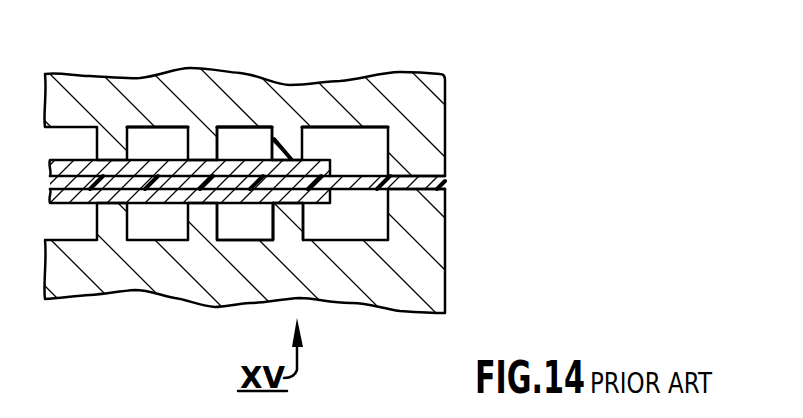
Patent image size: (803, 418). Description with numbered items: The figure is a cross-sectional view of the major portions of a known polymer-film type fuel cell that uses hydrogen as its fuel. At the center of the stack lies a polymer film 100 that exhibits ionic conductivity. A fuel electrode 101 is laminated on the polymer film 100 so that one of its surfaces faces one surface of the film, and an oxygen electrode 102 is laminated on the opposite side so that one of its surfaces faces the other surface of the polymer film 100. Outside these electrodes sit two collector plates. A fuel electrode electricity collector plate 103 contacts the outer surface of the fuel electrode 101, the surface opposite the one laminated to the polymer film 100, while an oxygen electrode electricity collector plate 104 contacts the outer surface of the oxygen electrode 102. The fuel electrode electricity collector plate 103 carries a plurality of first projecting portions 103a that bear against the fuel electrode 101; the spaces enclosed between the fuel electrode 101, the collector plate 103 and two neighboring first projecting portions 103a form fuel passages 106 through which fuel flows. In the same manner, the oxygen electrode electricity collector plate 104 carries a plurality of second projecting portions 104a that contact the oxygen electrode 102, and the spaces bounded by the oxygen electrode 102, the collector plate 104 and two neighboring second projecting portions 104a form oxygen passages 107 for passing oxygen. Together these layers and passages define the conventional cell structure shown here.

The polymer film 100 is at (447, 180).
The fuel electrode 101 is at (330, 162).
The oxygen electrode 102 is at (325, 199).
The fuel electrode electricity collector plate 103 is at (404, 60).
The first projecting portions 103a is at (287, 150).
The oxygen electrode electricity collector plate 104 is at (408, 285).
The second projecting portions 104a is at (290, 212).
The fuel passages 106 is at (232, 142).
The oxygen passages 107 is at (238, 228).